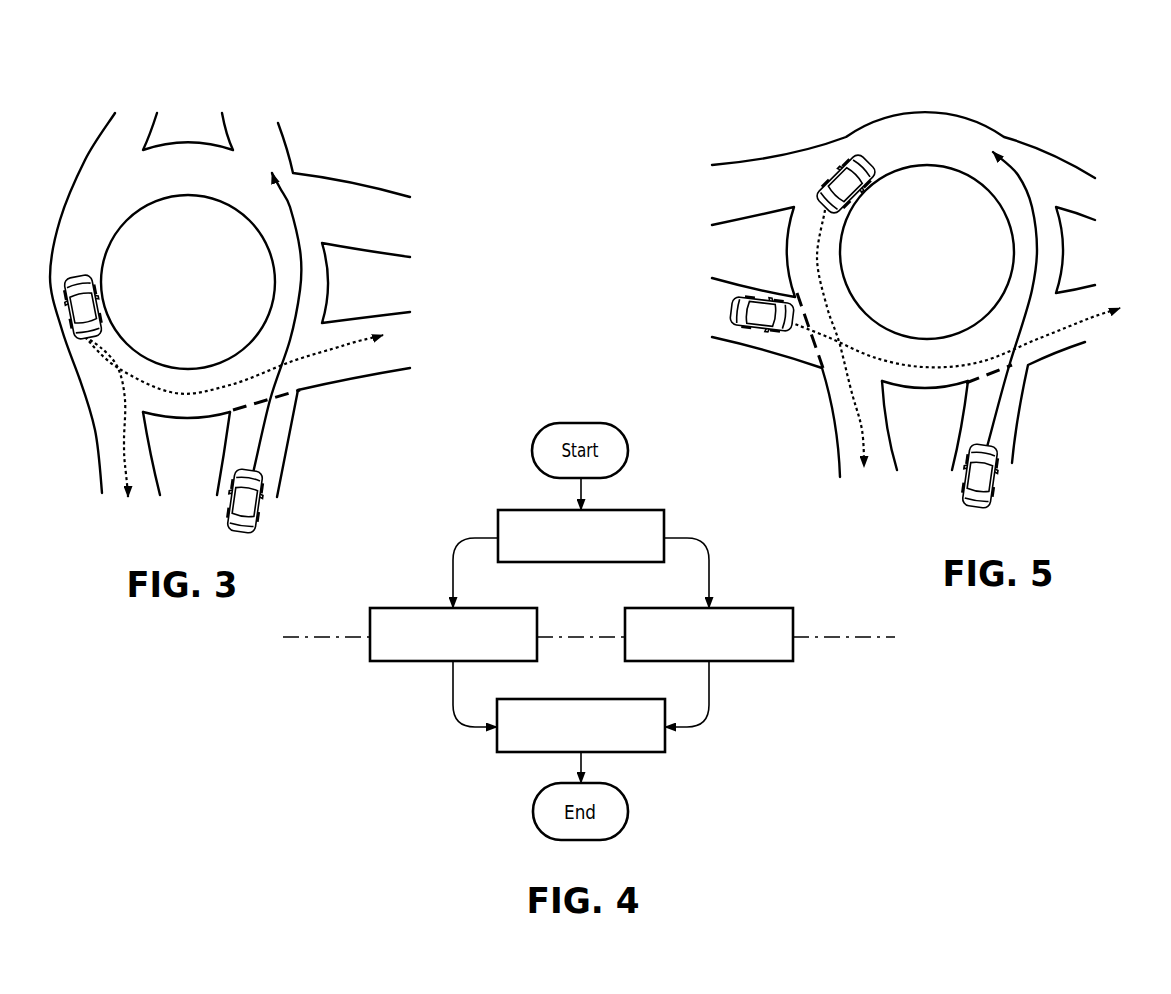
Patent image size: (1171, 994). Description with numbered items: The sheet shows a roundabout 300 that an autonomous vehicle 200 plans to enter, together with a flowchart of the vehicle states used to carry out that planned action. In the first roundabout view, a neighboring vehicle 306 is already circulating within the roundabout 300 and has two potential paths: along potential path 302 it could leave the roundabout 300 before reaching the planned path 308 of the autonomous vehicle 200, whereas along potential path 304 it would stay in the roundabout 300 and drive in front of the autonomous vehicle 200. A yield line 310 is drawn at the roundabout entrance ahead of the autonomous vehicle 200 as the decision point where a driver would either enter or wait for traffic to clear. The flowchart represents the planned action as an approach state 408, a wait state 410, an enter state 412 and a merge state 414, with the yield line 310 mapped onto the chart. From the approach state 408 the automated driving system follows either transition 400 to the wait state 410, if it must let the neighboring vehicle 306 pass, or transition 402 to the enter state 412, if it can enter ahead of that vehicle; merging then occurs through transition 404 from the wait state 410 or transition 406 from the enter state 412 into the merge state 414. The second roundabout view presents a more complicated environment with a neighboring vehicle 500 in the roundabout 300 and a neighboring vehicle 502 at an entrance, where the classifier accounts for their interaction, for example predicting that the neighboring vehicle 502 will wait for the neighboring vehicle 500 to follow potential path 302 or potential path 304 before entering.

In FIG. 3, the autonomous vehicle 200 is at (262, 503).
In FIG. 5, the autonomous vehicle 200 is at (996, 480).
In FIG. 3, the roundabout 300 is at (317, 165).
In FIG. 5, the roundabout 300 is at (1065, 150).
In FIG. 3, the potential path 302 is at (122, 460).
In FIG. 5, the potential path 302 is at (850, 400).
In FIG. 3, the potential path 304 is at (187, 395).
In FIG. 5, the potential path 304 is at (923, 369).
In FIG. 3, the neighboring vehicle 306 is at (72, 308).
In FIG. 3, the planned path 308 is at (297, 228).
In FIG. 5, the planned path 308 is at (1033, 208).
In FIG. 3, the yield line 310 is at (297, 392).
In FIG. 5, the yield line 310 is at (1015, 366).
In FIG. 4, the yield line 310 is at (835, 637).
In FIG. 4, the transition 400 is at (453, 560).
In FIG. 4, the transition 402 is at (709, 563).
In FIG. 4, the transition 404 is at (453, 690).
In FIG. 4, the transition 406 is at (710, 690).
In FIG. 4, the approach state 408 is at (645, 510).
In FIG. 4, the wait state 410 is at (482, 608).
In FIG. 4, the enter state 412 is at (652, 608).
In FIG. 4, the merge state 414 is at (582, 699).
In FIG. 5, the neighboring vehicle 500 is at (868, 160).
In FIG. 5, the neighboring vehicle 502 is at (732, 307).